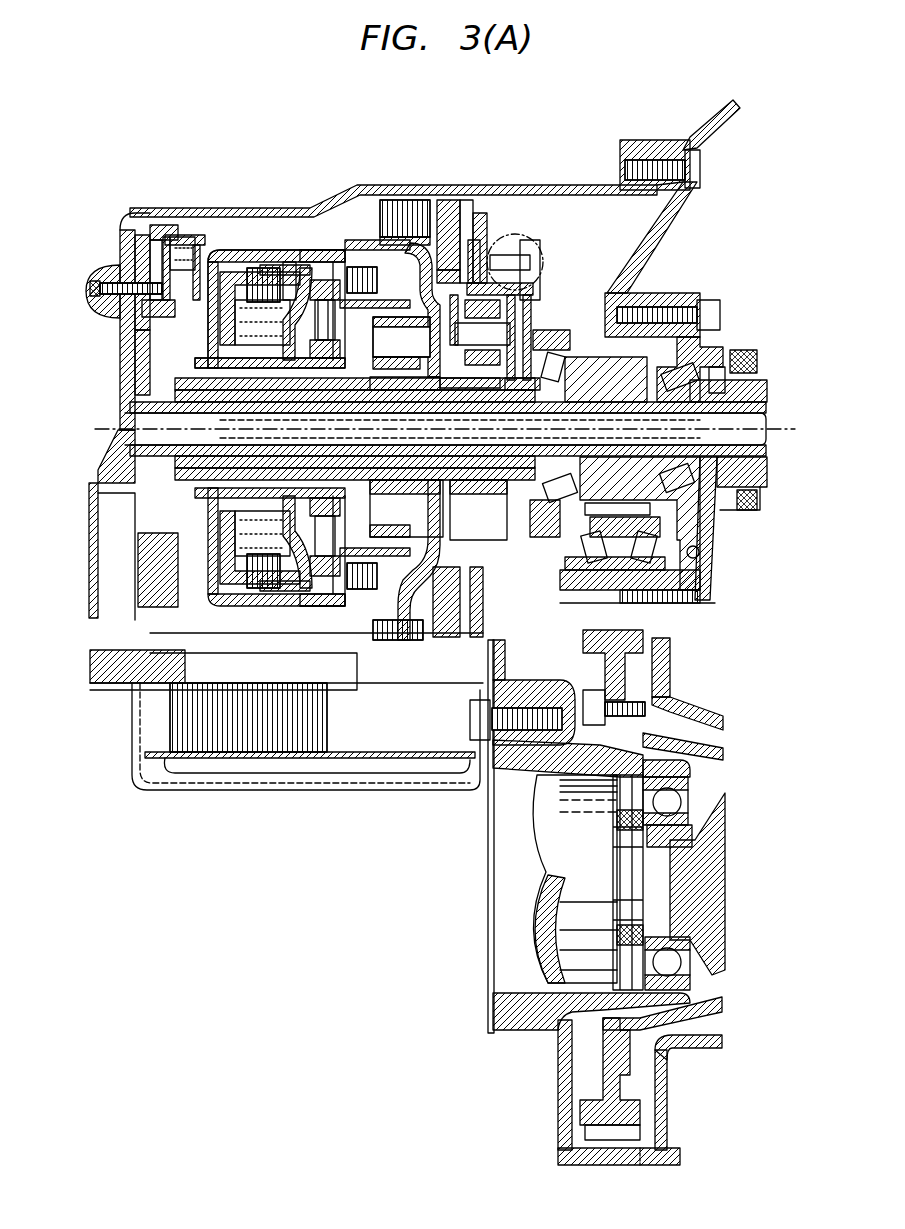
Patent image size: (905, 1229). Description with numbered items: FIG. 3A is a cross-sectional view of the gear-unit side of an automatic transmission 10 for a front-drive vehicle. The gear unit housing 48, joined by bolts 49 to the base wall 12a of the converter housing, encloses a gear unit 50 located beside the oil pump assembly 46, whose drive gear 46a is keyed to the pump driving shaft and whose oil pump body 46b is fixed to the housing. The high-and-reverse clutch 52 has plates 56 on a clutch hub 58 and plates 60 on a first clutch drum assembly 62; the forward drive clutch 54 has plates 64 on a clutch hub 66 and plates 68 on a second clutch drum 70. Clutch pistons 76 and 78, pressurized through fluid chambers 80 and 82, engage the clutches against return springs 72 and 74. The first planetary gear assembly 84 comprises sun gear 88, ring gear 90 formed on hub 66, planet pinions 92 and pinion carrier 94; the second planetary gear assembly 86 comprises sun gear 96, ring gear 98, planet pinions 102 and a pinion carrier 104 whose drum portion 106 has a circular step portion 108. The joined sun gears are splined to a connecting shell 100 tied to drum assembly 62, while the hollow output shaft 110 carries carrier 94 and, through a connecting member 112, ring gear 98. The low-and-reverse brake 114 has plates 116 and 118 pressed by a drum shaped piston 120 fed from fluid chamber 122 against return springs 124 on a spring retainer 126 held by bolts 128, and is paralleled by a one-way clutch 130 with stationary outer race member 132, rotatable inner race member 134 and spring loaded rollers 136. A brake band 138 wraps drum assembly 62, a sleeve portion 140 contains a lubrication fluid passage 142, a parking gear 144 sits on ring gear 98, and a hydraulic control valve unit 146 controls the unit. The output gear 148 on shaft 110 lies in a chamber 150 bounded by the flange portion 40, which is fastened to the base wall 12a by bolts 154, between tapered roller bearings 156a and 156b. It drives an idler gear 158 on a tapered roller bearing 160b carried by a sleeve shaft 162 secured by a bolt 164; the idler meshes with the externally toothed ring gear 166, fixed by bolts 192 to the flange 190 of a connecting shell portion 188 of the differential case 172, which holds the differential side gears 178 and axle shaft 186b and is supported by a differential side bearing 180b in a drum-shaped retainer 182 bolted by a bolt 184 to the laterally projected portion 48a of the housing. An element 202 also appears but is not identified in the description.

The automatic transmission 10 is at (598, 135).
The base wall 12a is at (665, 218).
The flange portion 40 is at (702, 296).
The transmission oil pump assembly 46 is at (130, 345).
The drive gear 46a is at (140, 362).
The oil pump body 46b is at (135, 325).
The gear unit housing 48 is at (332, 250).
The laterally projected portion 48a is at (490, 680).
The bolts 49 is at (645, 165).
The gear unit 50 is at (498, 225).
The high-and-reverse clutch 52 is at (240, 300).
The forward drive clutch 54 is at (323, 270).
The plates 56 is at (235, 268).
The clutch hub 58 is at (266, 272).
The plates 60 is at (230, 285).
The first clutch drum assembly 62 is at (256, 300).
The plates 64 is at (298, 280).
The clutch hub 66 is at (346, 262).
The plates 68 is at (310, 260).
The second clutch drum 70 is at (302, 292).
The return spring 72 is at (148, 283).
The return spring 74 is at (264, 235).
The clutch piston 76 is at (148, 268).
The clutch piston 78 is at (266, 290).
The fluid chamber 80 is at (200, 499).
The fluid chamber 82 is at (370, 506).
The first planetary gear assembly 84 is at (425, 240).
The second planetary gear assembly 86 is at (500, 300).
The sun gear 88 is at (430, 400).
The ring gear 90 is at (352, 236).
The planet pinions 92 is at (352, 255).
The pinion carrier 94 is at (376, 346).
The sun gear 96 is at (538, 345).
The ring gear 98 is at (492, 288).
The connecting shell 100 is at (446, 270).
The planet pinions 102 is at (500, 278).
The pinion carrier 104 is at (505, 300).
The drum portion 106 is at (410, 240).
The circular step portion 108 is at (510, 265).
The transmission hollow output shaft 110 is at (588, 365).
The connecting member 112 is at (522, 330).
The low-and-reverse brake 114 is at (406, 230).
The plates 116 is at (378, 226).
The plates 118 is at (398, 230).
The drum shaped piston 120 is at (232, 268).
The fluid chamber 122 is at (160, 220).
The return springs 124 is at (165, 250).
The spring retainer 126 is at (178, 255).
The bolts 128 is at (90, 285).
The transmission one-way clutch 130 is at (444, 256).
The stationary outer race member 132 is at (450, 285).
The rotatable inner race member 134 is at (472, 250).
The spring loaded rollers 136 is at (450, 265).
The brake band 138 is at (290, 300).
The sleeve portion 140 is at (148, 388).
The fluid passage 142 is at (152, 404).
The parking gear 144 is at (483, 620).
The hydraulic control valve unit 146 is at (155, 727).
The output gear 148 is at (760, 360).
The chamber 150 is at (695, 345).
The bolts 154 is at (716, 314).
The tapered roller bearing 156a is at (770, 390).
The tapered roller bearing 156b is at (655, 300).
The idler gear 158 is at (598, 572).
The tapered roller bearing 160b is at (582, 556).
The sleeve shaft 162 is at (698, 560).
The bolt 164 is at (680, 600).
The externally toothed ring gear 166 is at (600, 652).
The differential case 172 is at (720, 960).
The differential side gears 178 is at (722, 928).
The differential side bearing 180b is at (680, 800).
The drum-shaped retainer 182 is at (562, 1010).
The bolt 184 is at (470, 725).
The axle shaft 186b is at (553, 850).
The connecting shell portion 188 is at (725, 750).
The flange 190 is at (645, 1045).
The bolts 192 is at (600, 690).
The piston 202 is at (522, 260).